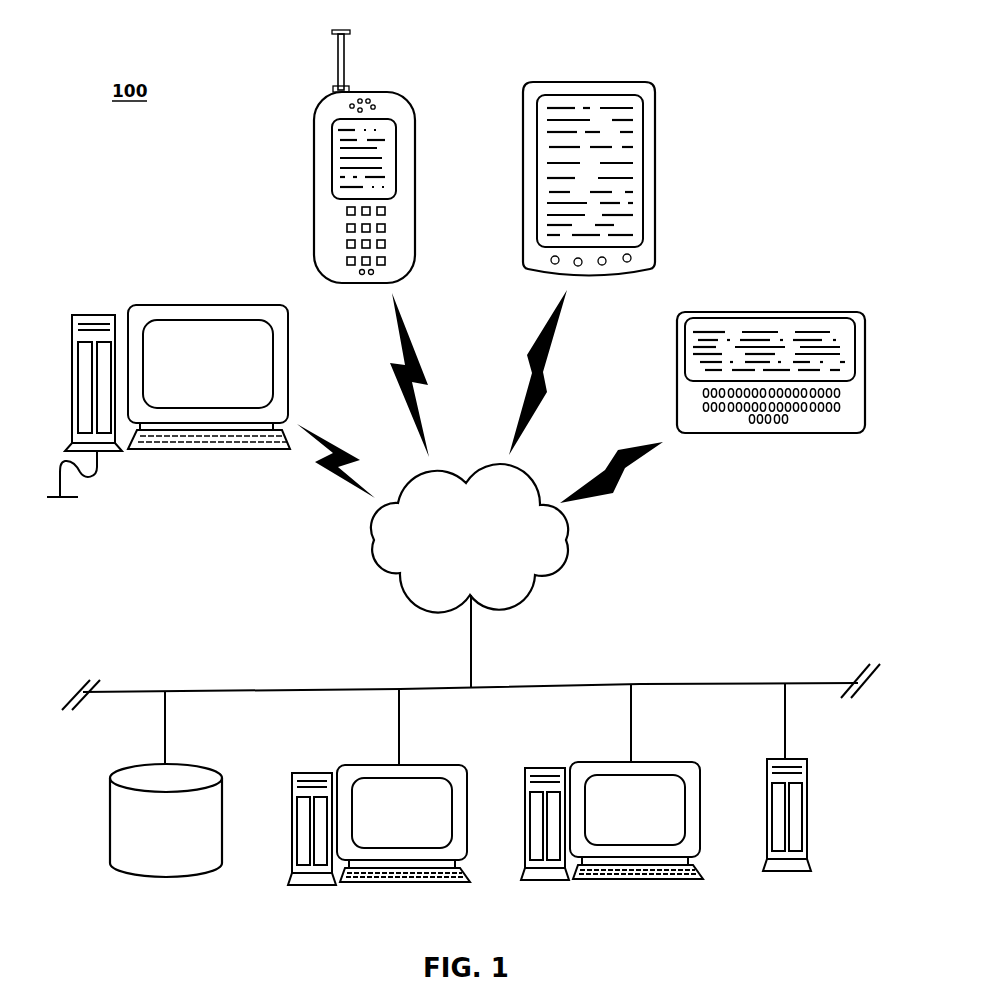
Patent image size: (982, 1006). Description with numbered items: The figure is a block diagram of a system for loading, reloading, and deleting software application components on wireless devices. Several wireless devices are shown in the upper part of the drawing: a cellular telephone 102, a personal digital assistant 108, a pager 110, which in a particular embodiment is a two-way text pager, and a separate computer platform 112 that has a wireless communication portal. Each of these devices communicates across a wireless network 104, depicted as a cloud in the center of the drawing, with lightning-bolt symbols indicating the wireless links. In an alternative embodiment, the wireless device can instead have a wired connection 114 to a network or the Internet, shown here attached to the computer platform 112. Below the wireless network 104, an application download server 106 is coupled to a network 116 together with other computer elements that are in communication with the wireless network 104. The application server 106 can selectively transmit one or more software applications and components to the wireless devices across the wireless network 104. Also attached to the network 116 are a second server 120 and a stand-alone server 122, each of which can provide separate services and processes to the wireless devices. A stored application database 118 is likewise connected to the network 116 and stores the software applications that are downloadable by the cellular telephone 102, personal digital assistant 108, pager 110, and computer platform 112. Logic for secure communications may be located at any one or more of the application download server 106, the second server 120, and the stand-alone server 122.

The cellular telephone 102 is at (392, 93).
The wireless network 104 is at (565, 535).
The application server 106 is at (379, 765).
The personal digital assistant 108 is at (590, 83).
The pager 110 is at (803, 435).
The separate computer platform 112 is at (198, 305).
The wired connection 114 is at (109, 486).
The network 116 is at (672, 683).
The stored application database 118 is at (110, 822).
The second server 120 is at (614, 762).
The stand-alone server 122 is at (805, 793).